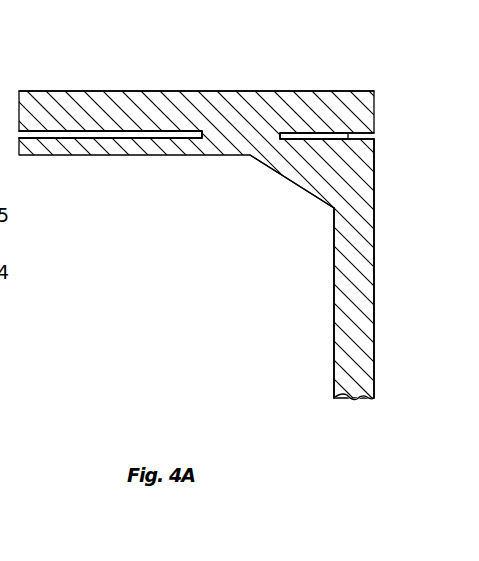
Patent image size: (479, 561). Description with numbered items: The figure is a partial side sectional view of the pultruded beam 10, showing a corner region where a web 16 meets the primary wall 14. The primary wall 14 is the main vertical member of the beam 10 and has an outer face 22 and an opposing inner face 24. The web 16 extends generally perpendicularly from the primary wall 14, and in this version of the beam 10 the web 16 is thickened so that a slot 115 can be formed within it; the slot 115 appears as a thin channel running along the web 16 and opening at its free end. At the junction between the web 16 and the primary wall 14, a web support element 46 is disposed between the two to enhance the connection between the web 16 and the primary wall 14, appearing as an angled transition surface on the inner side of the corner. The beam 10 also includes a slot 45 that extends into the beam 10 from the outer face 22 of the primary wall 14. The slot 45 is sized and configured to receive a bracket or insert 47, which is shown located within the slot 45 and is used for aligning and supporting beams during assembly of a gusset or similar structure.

The pultruded beam 10 is at (176, 71).
The web 16 is at (60, 89).
The slot 115 is at (110, 133).
The insert 47 is at (306, 133).
The slot 45 is at (370, 137).
The web support element 46 is at (280, 173).
The outer face 22 is at (376, 291).
The primary wall 14 is at (379, 364).
The inner face 24 is at (333, 347).